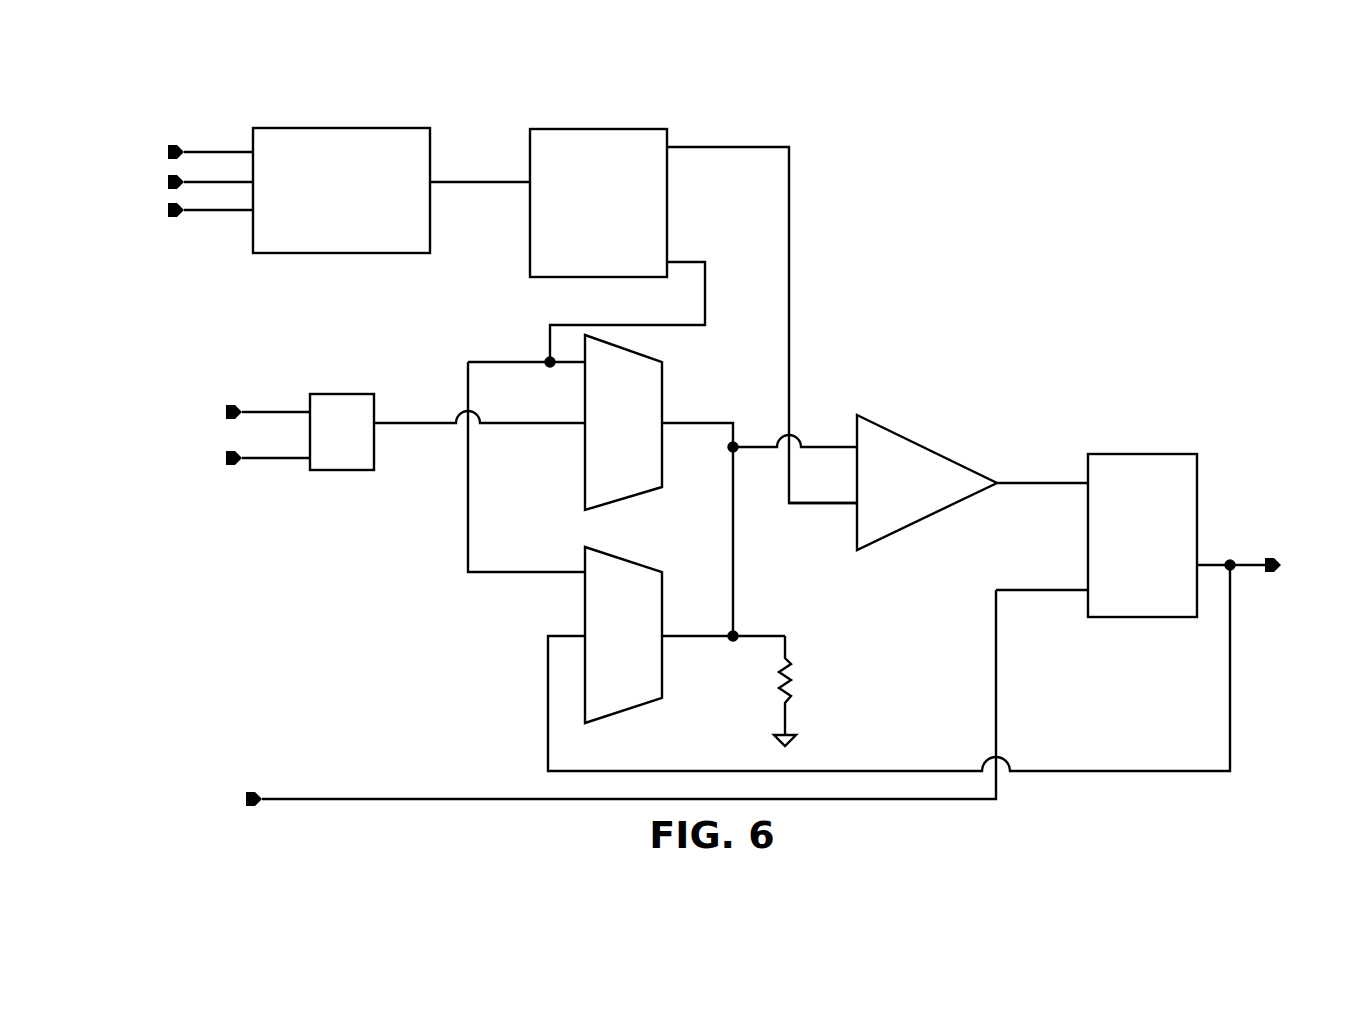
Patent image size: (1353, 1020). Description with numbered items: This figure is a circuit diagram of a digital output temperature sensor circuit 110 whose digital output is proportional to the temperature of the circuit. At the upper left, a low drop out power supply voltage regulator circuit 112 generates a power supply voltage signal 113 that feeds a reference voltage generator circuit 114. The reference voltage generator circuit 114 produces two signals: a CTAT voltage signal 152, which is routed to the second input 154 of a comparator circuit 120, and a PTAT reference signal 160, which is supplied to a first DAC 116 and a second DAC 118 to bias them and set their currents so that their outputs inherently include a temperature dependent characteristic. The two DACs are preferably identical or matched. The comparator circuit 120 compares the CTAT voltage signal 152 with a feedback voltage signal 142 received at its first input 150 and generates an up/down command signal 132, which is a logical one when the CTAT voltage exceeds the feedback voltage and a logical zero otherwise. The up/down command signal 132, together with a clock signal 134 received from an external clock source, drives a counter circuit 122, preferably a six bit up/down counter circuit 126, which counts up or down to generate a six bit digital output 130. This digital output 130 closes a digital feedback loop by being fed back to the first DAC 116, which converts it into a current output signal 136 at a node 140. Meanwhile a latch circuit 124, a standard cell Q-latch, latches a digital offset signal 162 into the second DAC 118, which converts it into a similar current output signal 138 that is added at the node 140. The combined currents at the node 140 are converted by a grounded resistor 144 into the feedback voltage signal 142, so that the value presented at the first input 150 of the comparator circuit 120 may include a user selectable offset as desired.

The digital output temperature sensor circuit 110 is at (322, 810).
The low drop out power supply voltage regulator circuit 112 is at (340, 124).
The power supply voltage signal 113 is at (461, 179).
The reference voltage generator circuit 114 is at (617, 126).
The first digital to analog converter 116 is at (668, 678).
The second digital to analog converter 118 is at (583, 466).
The comparator circuit 120 is at (920, 428).
The counter circuit 122 is at (1140, 452).
The latch circuit 124 is at (318, 476).
The 6 bit up/down counter circuit 126 is at (1182, 465).
The 6 bit digital output 130 is at (1250, 545).
The up/down command signal 132 is at (1044, 480).
The clock signal 134 is at (1000, 588).
The current output signal 136 is at (700, 633).
The current output signal 138 is at (702, 420).
The node 140 is at (740, 632).
The feedback voltage signal 142 is at (728, 493).
The grounded resistor 144 is at (792, 674).
The first input of the comparator 150 is at (838, 430).
The CTAT voltage signal 152 is at (795, 270).
The second input of the comparator 154 is at (836, 510).
The PTAT reference signal 160 is at (669, 259).
The digital offset signal 162 is at (257, 410).